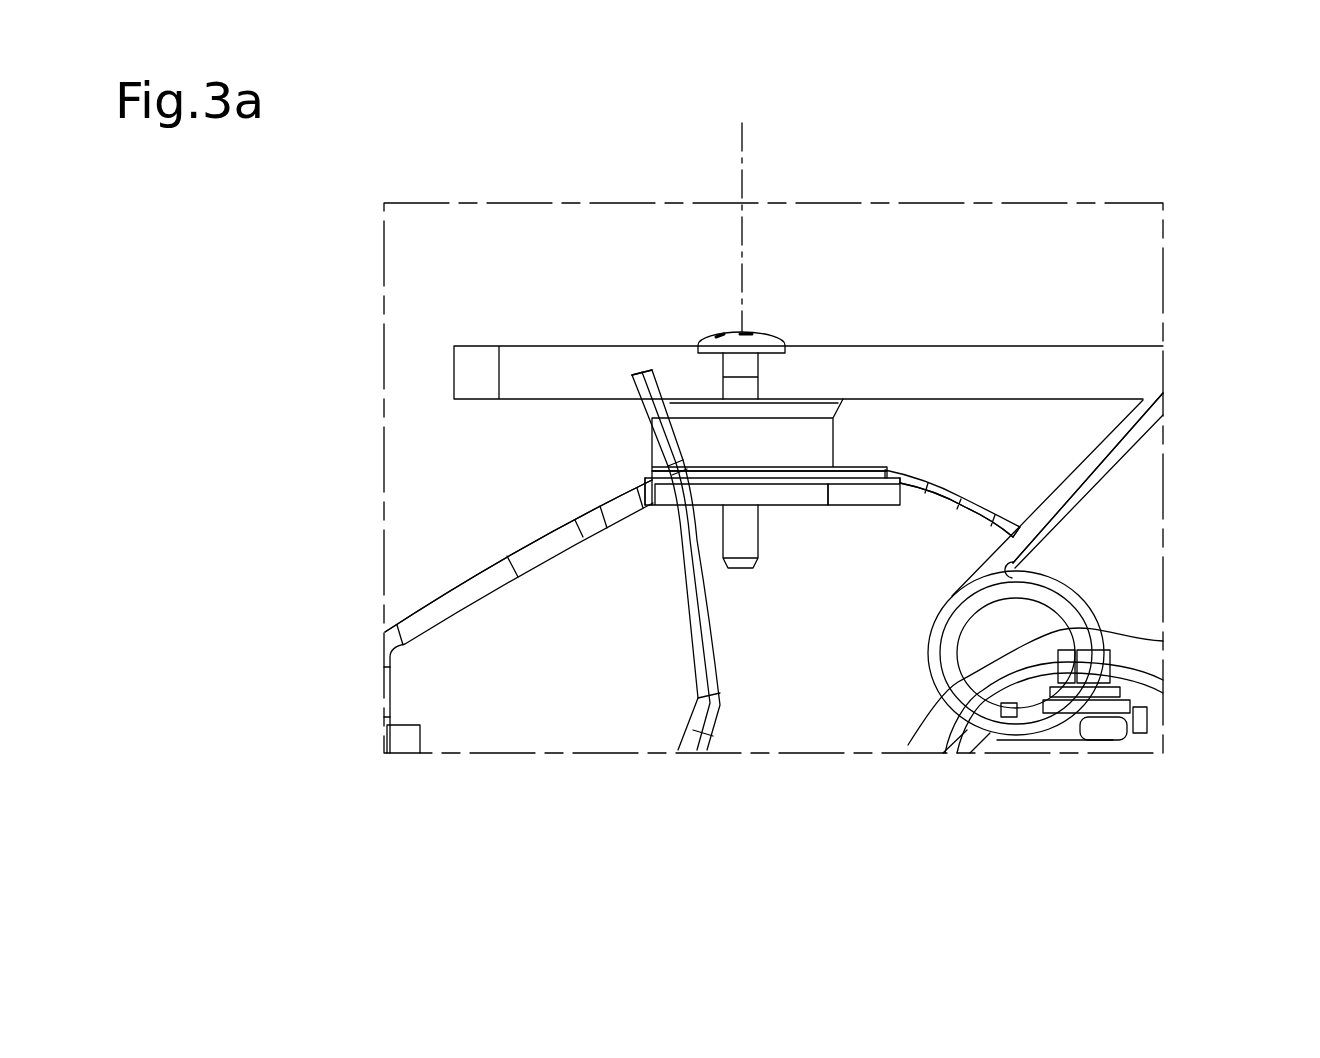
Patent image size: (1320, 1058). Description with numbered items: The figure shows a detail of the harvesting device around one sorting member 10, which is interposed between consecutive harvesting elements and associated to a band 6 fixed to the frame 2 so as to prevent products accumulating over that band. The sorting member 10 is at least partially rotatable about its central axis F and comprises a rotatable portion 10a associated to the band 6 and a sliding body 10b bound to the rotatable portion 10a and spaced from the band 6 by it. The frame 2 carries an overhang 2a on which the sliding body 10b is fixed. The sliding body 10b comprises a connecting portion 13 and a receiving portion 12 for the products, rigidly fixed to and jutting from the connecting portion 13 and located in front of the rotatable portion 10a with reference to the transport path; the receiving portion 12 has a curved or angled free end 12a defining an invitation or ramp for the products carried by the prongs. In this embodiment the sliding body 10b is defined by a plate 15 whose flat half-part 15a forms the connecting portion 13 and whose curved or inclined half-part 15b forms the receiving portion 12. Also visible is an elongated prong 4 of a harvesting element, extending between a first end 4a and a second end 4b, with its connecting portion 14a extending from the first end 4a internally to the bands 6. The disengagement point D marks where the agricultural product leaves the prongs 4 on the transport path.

The frame 2 is at (450, 612).
The overhang 2a is at (652, 495).
The elongated prong 4 is at (1087, 592).
The first end 4a is at (1013, 565).
The second end 4b is at (651, 378).
The band 6 is at (943, 346).
The sorting member 10 is at (787, 380).
The rotatable portion 10a is at (776, 453).
The sliding body 10b is at (853, 483).
The receiving portion 12 is at (927, 502).
The curved or angled free end 12a is at (987, 507).
The connecting portion 13 is at (775, 483).
The connecting portion 14a is at (1122, 445).
The plate 15 is at (897, 457).
The flat half-part 15a is at (713, 477).
The curved or inclined half-part 15b is at (958, 510).
The disengagement point D is at (640, 437).
The central axis F is at (742, 168).